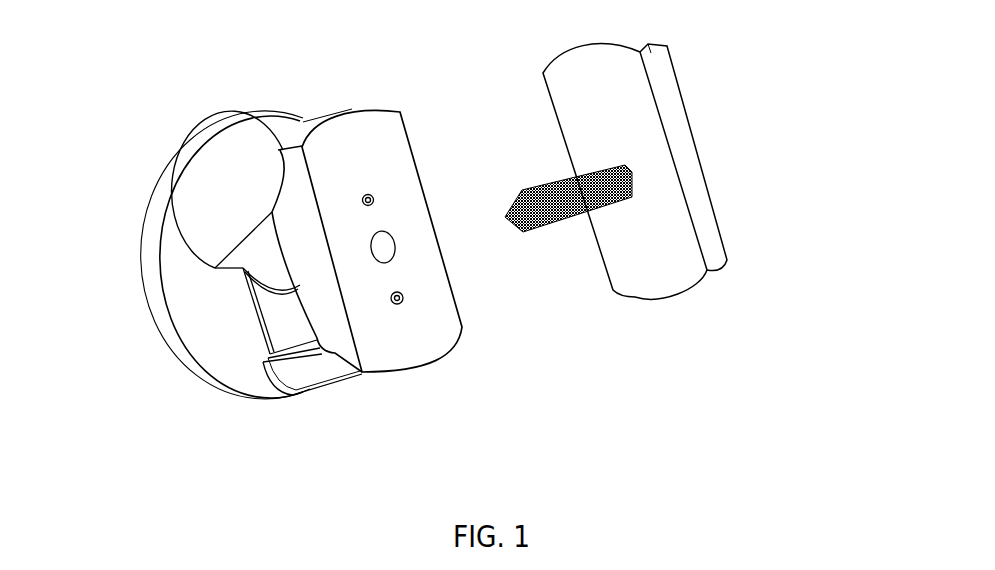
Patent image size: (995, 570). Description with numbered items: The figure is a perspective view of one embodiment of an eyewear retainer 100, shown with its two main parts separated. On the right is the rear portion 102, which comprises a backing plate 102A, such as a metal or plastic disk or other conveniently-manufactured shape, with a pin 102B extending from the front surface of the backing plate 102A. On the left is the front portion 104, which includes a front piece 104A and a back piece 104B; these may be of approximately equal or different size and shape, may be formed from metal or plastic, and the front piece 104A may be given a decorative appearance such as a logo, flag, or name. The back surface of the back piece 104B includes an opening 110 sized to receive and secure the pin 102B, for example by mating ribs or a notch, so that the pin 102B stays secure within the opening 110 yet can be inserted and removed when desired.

The eyewear retainer 100 is at (461, 261).
The rear portion 102 is at (653, 153).
The backing plate 102A is at (723, 233).
The pin 102B is at (550, 187).
The front portion 104 is at (311, 268).
The front piece 104A is at (190, 133).
The back piece 104B is at (420, 197).
The opening 110 is at (388, 248).